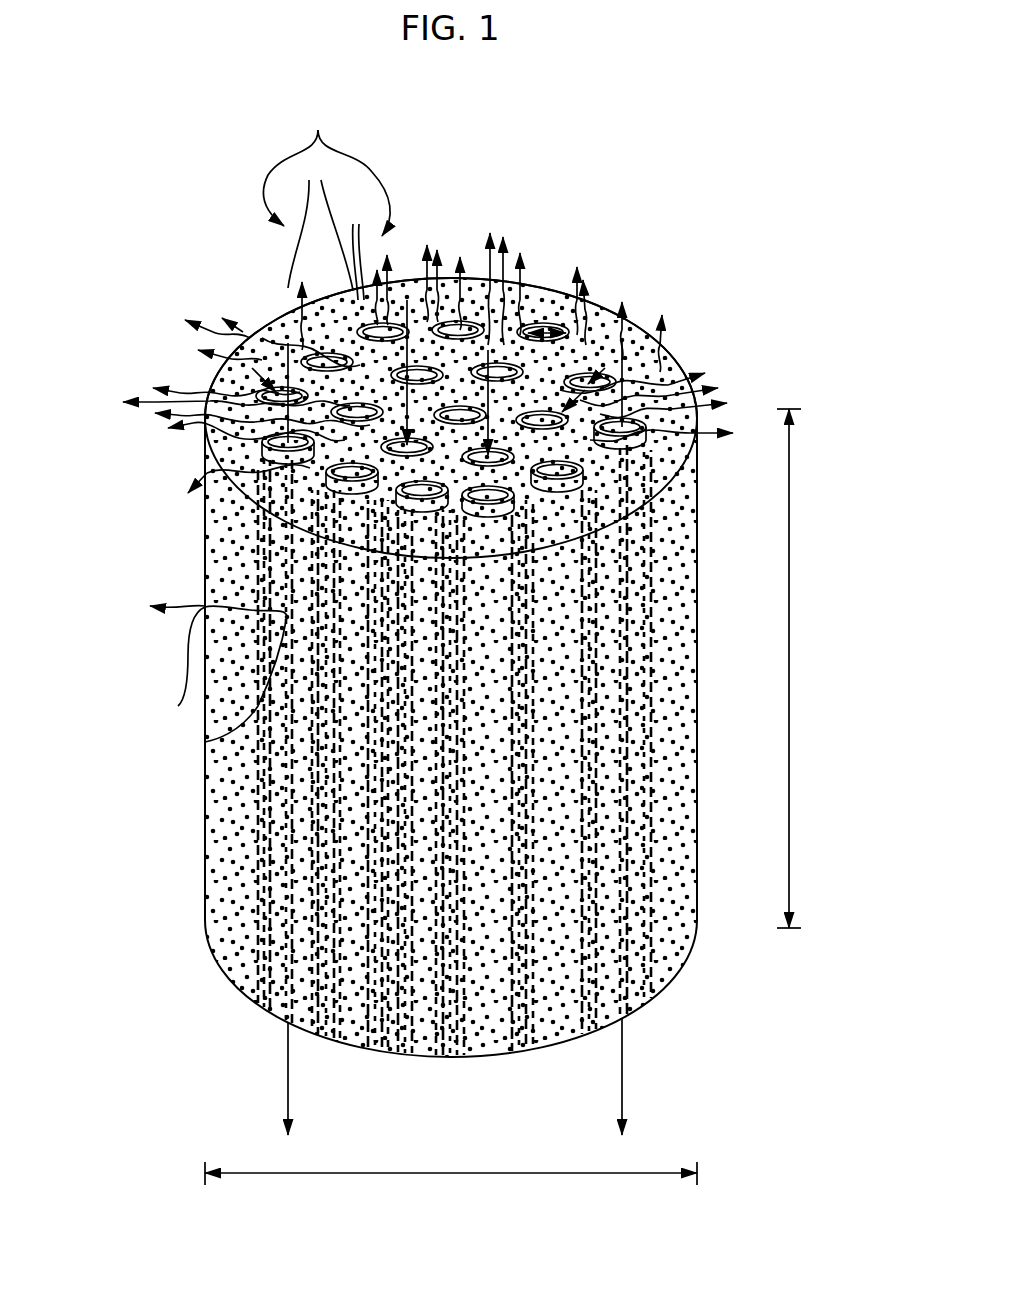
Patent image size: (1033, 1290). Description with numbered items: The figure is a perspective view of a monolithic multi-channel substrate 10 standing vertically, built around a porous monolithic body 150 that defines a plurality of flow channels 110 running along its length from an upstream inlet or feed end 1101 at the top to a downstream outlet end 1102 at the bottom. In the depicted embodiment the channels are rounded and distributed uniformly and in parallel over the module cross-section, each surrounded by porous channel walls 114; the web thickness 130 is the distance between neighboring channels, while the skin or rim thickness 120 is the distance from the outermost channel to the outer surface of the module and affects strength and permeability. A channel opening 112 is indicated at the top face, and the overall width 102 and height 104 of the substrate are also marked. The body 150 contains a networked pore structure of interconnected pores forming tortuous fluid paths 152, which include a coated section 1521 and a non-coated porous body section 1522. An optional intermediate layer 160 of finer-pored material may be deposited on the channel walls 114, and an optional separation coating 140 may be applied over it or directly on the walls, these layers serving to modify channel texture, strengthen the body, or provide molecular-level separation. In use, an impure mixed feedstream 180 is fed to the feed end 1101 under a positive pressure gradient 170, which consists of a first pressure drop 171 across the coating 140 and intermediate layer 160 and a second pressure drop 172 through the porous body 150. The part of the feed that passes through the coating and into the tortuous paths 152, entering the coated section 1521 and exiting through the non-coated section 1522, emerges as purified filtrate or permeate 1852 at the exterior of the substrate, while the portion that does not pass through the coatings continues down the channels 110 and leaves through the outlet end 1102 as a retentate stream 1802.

The monolithic multi-channel substrate 10 is at (180, 968).
The diameter of filter body 102 is at (460, 1173).
The height of filter body 104 is at (800, 625).
The flow channels 110 is at (337, 338).
The upstream inlet or feed end 1101 is at (252, 368).
The downstream outlet end 1102 is at (286, 1022).
The channel outlet 112 is at (571, 327).
The porous channel walls 114 is at (612, 452).
The skin or rim thickness 120 is at (590, 323).
The web thickness 130 is at (523, 327).
The coating layer 140 is at (505, 508).
The porous monolithic body 150 is at (222, 797).
The tortuous fluid paths 152 is at (252, 610).
The coated section 1521 is at (207, 740).
The non-coated porous body section 1522 is at (178, 706).
The intermediate layer 160 is at (422, 492).
The positive pressure gradient 170 is at (326, 171).
The first pressure drop 171 is at (355, 249).
The second pressure drop 172 is at (320, 223).
The impure mixed feedstream 180 is at (262, 338).
The retentate stream 1802 is at (297, 1118).
The purified filtrate or permeate 1852 is at (148, 600).